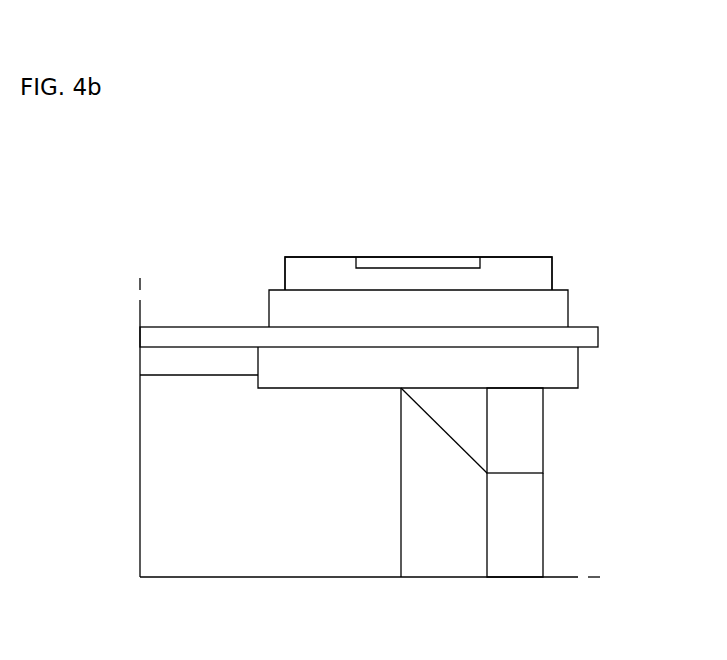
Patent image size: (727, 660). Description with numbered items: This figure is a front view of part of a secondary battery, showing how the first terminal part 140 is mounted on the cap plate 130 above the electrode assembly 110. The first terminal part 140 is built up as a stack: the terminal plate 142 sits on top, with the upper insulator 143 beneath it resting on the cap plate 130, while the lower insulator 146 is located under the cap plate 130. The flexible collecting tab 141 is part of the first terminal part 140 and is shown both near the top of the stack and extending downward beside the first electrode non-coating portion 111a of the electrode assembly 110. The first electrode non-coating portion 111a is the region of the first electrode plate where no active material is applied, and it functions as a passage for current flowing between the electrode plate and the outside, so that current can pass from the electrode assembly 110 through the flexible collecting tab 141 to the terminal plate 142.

The electrode assembly 110 is at (282, 552).
The first electrode non-coating portion 111a is at (535, 525).
The cap plate 130 is at (592, 338).
The first terminal part 140 is at (482, 246).
The flexible collecting tab 141 is at (380, 253).
The terminal plate 142 is at (523, 265).
The upper insulator 143 is at (563, 310).
The lower insulator 146 is at (567, 367).